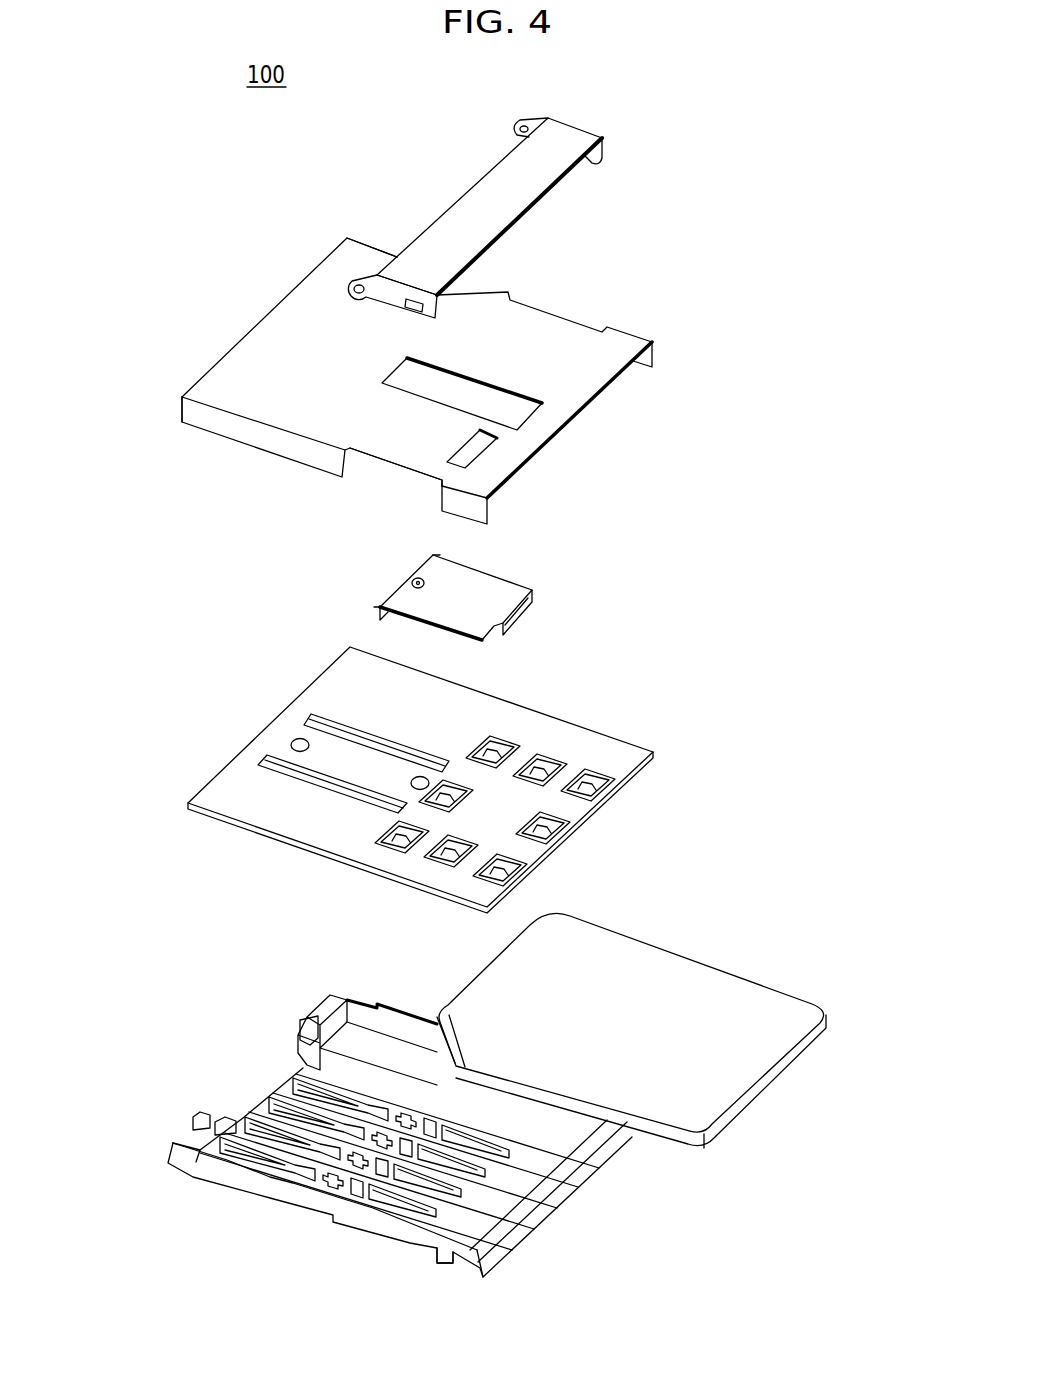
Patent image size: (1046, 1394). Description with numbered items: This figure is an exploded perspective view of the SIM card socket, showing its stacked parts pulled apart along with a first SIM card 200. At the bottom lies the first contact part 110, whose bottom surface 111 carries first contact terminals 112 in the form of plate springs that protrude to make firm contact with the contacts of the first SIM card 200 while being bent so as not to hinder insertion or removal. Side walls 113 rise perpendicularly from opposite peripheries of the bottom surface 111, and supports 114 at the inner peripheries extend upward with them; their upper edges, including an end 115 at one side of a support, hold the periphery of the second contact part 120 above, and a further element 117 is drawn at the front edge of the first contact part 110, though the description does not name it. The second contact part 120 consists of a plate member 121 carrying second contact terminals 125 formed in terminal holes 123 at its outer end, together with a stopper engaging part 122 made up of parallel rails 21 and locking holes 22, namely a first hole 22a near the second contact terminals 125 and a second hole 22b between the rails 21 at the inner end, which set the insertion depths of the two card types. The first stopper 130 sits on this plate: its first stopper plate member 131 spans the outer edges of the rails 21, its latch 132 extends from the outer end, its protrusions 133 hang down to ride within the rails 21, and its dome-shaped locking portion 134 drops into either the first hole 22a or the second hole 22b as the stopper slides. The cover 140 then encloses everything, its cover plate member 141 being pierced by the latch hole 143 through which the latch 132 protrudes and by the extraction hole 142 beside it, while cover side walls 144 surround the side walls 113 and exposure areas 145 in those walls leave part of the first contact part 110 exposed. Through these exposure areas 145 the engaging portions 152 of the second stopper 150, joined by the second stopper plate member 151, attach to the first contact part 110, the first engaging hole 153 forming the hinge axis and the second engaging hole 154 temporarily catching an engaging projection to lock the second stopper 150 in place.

The first contact part 110 is at (409, 1135).
The bottom surface 111 is at (523, 1230).
The first contact terminals 112 is at (497, 1258).
The side walls 113 is at (389, 1002).
The supports 114 is at (297, 1022).
The end 115 is at (222, 1118).
The mounting tab 117 is at (438, 1266).
The second contact part 120 is at (423, 756).
The plate member 121 is at (225, 788).
The stopper engaging part 122 is at (185, 627).
The rails 21 is at (268, 763).
The locking holes 22 is at (322, 708).
The first hole 22a is at (418, 782).
The second hole 22b is at (297, 740).
The terminal holes 123 is at (608, 771).
The second contact terminals 125 is at (556, 843).
The first stopper 130 is at (437, 597).
The first stopper plate member 131 is at (467, 618).
The latch 132 is at (533, 615).
The protrusions 133 is at (414, 562).
The locking portion 134 is at (425, 584).
The cover 140 is at (416, 354).
The cover plate member 141 is at (227, 378).
The extraction hole 142 is at (488, 450).
The latch hole 143 is at (515, 412).
The cover side walls 144 is at (370, 236).
The exposure areas 145 is at (378, 472).
The second stopper 150 is at (497, 184).
The second stopper plate member 151 is at (520, 190).
The engaging portions 152 is at (606, 148).
The first engaging hole 153 is at (356, 284).
The second engaging hole 154 is at (420, 301).
The first SIM card 200 is at (697, 955).